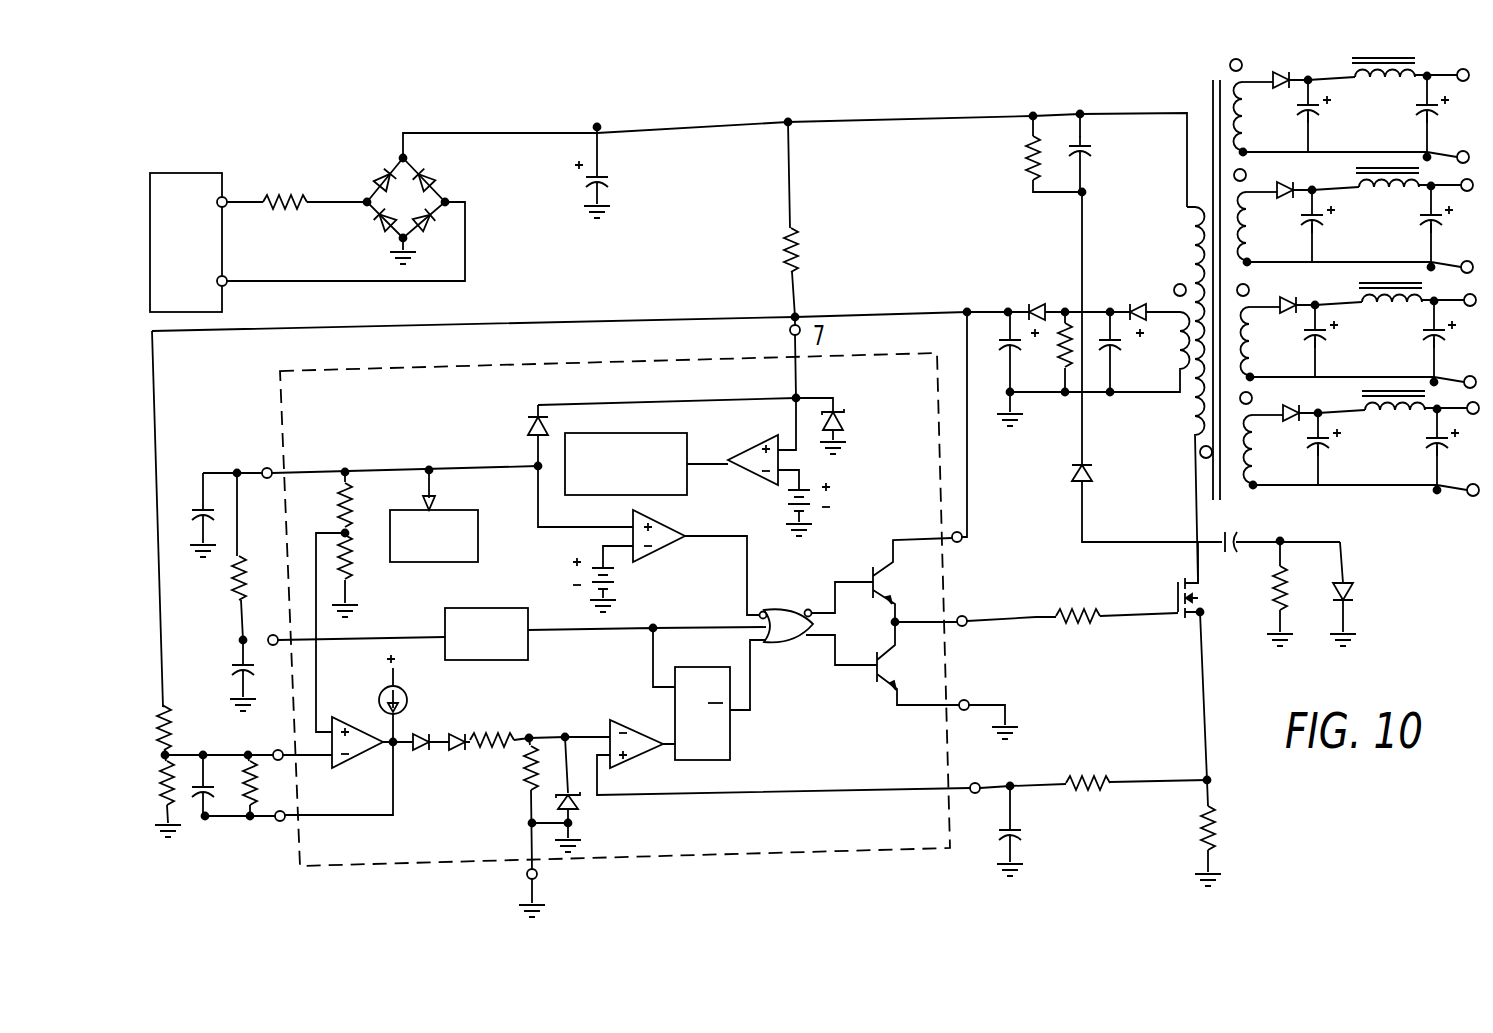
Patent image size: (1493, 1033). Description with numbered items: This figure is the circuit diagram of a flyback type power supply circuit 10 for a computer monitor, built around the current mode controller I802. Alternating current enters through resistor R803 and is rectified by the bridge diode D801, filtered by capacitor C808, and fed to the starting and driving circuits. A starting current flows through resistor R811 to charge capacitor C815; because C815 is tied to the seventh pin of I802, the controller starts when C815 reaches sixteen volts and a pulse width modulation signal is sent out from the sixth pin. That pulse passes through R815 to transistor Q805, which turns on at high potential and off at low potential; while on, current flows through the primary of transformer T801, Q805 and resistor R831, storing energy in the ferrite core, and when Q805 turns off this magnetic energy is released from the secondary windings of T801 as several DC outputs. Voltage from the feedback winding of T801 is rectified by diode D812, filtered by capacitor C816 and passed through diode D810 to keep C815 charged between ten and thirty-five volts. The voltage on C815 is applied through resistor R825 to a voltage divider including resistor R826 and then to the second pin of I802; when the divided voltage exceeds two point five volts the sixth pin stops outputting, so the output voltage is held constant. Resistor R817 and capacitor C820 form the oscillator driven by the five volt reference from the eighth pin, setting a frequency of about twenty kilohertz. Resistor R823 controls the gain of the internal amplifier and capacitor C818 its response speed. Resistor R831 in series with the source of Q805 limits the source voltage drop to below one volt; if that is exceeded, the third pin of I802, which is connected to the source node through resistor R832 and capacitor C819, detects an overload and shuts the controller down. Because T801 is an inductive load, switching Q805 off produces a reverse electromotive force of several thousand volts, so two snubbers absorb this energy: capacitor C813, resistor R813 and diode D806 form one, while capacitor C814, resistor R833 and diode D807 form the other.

The power supply circuit 10 is at (178, 202).
The resistor R803 is at (297, 183).
The diode D801 is at (707, 188).
The capacitor C808 is at (620, 171).
The resistor R811 is at (823, 220).
The resistor R813 is at (1025, 154).
The capacitor C813 is at (1111, 152).
The transformer T801 is at (1115, 318).
The diode D810 is at (1068, 288).
The diode D812 is at (1121, 288).
The capacitor C815 is at (1016, 385).
The capacitor C816 is at (1131, 368).
The diode D806 is at (1206, 372).
The capacitor C814 is at (1354, 294).
The IC UC3842A I802 is at (786, 829).
The resistor R817 is at (212, 557).
The capacitor C820 is at (218, 673).
The resistor R825 is at (215, 732).
The resistor R826 is at (167, 815).
The capacitor C818 is at (232, 803).
The resistor R823 is at (267, 815).
The resistor R815 is at (1107, 601).
The transistor Q805 is at (1174, 661).
The resistor R833 is at (1257, 593).
The diode D807 is at (1371, 594).
The current sense filter resistor R832 is at (1095, 767).
The current sense filter capacitor C819 is at (1038, 831).
The resistor R831 is at (1241, 833).